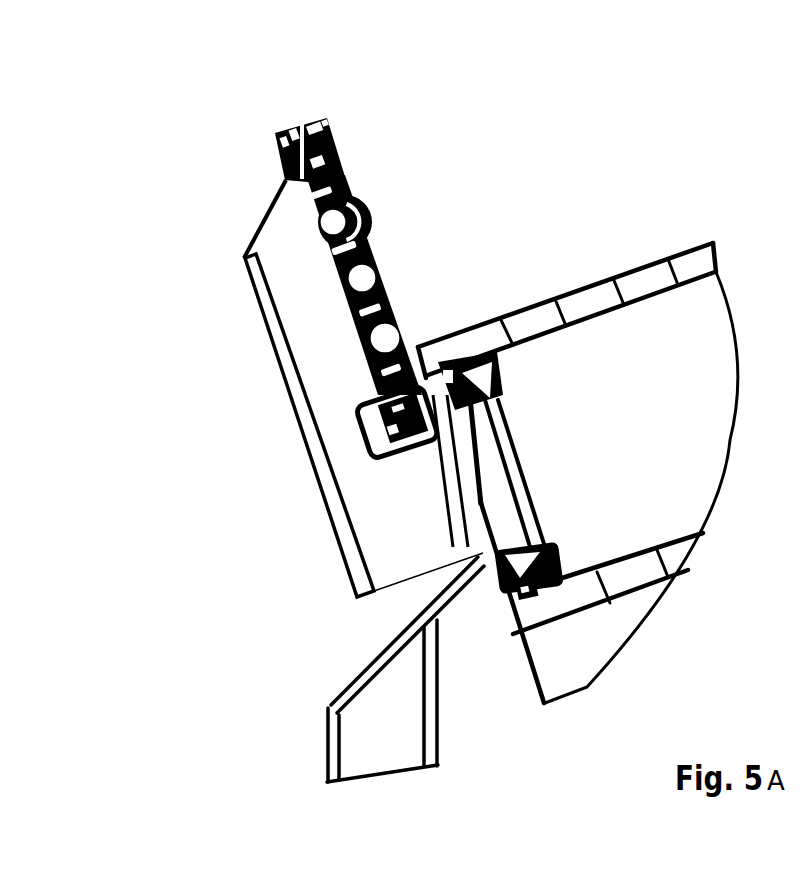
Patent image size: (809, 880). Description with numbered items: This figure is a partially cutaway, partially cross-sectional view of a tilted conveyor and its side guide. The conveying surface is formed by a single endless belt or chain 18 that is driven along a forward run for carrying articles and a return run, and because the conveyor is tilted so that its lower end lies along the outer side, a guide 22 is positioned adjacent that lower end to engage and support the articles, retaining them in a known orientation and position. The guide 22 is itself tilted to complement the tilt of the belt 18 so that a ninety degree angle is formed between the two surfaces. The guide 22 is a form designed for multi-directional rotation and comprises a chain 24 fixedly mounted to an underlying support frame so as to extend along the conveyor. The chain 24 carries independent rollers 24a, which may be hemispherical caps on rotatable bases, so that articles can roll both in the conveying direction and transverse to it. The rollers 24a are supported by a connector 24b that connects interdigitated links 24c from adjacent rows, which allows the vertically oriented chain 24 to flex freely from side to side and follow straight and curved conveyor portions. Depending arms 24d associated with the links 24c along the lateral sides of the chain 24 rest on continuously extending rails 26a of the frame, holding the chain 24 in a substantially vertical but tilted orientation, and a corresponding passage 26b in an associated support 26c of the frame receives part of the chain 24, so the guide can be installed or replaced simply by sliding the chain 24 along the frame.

The endless belt or chain 18 is at (617, 270).
The guide 22 is at (236, 183).
The chain 24 is at (342, 84).
The rollers 24a is at (404, 318).
The connector 24b is at (333, 150).
The interdigitated links 24c is at (328, 120).
The depending arms 24d is at (273, 133).
The rails 26a is at (303, 117).
The passage 26b is at (357, 403).
The support 26c is at (244, 258).